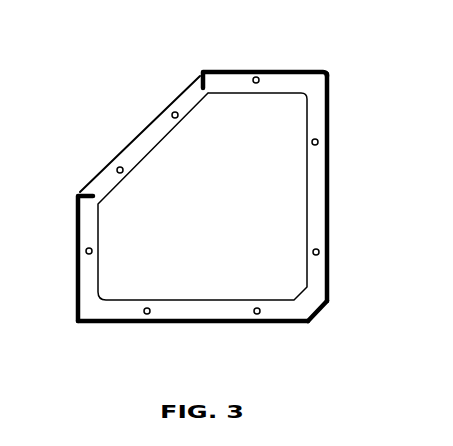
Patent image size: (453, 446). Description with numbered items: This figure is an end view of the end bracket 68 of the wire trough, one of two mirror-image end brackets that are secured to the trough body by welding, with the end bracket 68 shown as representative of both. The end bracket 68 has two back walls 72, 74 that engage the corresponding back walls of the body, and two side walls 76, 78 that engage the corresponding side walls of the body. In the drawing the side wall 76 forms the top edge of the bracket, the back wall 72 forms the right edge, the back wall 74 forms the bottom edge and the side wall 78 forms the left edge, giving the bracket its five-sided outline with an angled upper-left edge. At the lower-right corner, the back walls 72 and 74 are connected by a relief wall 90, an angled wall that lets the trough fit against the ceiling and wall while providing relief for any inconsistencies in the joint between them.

The end bracket 68 is at (222, 195).
The back wall 72 is at (330, 182).
The back wall 74 is at (242, 325).
The side wall 76 is at (265, 70).
The side wall 78 is at (75, 262).
The relief wall 90 is at (320, 310).